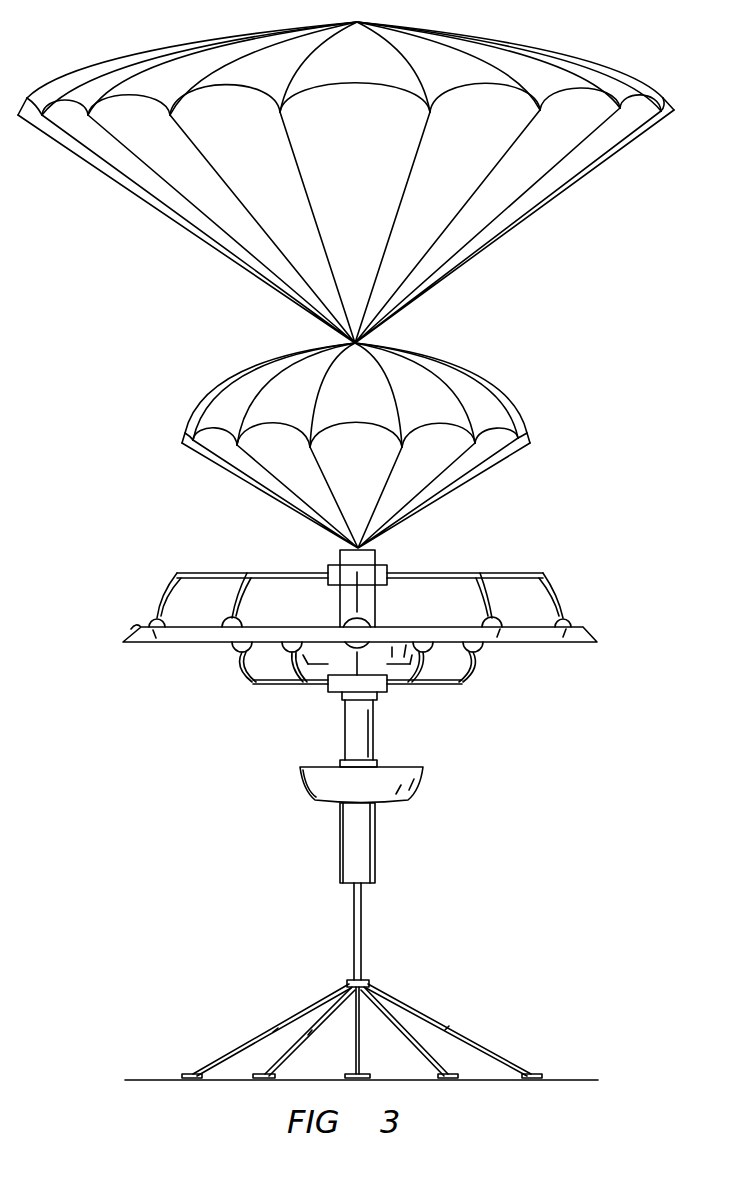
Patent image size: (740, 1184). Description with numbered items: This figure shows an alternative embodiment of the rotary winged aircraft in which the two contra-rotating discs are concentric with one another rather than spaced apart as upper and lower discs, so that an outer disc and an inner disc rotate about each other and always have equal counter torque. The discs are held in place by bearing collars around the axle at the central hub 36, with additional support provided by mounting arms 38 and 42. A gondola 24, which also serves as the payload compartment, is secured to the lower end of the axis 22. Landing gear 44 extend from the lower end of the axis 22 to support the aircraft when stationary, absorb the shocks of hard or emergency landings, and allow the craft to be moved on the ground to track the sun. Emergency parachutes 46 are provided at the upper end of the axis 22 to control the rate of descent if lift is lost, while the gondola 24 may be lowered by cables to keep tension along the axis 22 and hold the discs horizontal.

The emergency parachutes 46 is at (615, 72).
The mounting arm 38 is at (552, 588).
The central hub assembly 36 is at (397, 660).
The mounting arm 42 is at (470, 682).
The gondola 24 is at (418, 787).
The axis 22 is at (375, 862).
The landing gear 44 is at (438, 1020).